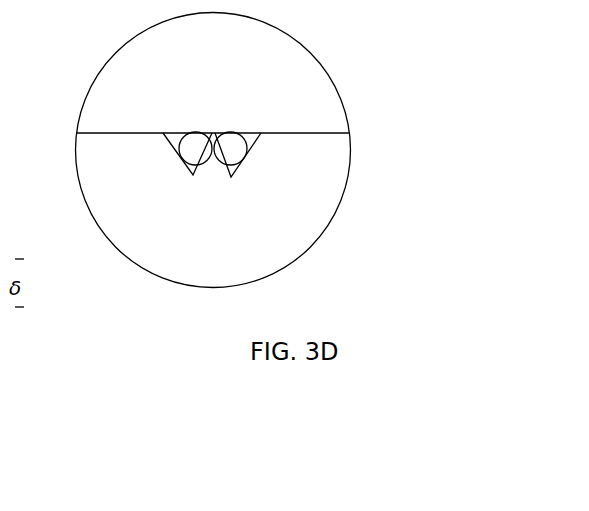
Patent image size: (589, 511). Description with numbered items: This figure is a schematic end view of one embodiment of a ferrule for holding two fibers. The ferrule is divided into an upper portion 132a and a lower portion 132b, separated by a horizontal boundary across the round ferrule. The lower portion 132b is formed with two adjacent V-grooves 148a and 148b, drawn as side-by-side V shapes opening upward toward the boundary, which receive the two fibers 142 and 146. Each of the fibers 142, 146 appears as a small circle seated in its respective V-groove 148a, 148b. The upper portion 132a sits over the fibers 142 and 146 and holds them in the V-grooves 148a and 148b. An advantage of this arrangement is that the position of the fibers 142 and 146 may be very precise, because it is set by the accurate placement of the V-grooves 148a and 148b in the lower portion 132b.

The upper portion 132a is at (191, 54).
The lower portion 132b is at (194, 264).
The fiber 142 is at (247, 151).
The fiber 146 is at (178, 150).
The V-groove 148a is at (236, 175).
The V-groove 148b is at (203, 162).